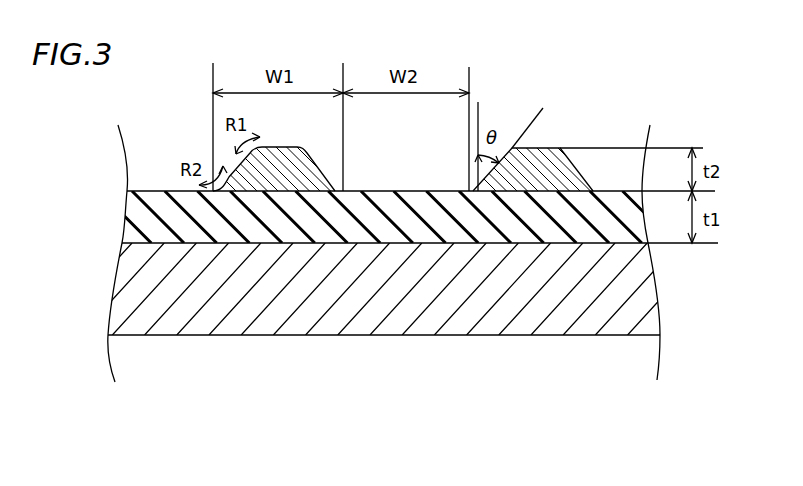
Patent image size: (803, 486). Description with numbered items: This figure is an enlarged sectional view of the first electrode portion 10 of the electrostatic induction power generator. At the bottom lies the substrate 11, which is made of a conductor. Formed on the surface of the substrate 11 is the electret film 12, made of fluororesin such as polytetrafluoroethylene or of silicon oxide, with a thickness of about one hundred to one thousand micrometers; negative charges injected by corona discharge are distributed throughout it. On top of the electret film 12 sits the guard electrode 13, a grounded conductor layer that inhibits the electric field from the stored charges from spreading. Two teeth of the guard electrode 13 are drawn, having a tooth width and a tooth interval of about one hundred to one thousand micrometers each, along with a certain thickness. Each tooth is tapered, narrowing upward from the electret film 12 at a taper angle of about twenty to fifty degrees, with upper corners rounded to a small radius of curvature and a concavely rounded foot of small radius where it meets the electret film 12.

The first electrode portion 10 is at (396, 207).
The substrate 11 is at (117, 296).
The electret film 12 is at (127, 213).
The guard electrode 13 is at (288, 160).